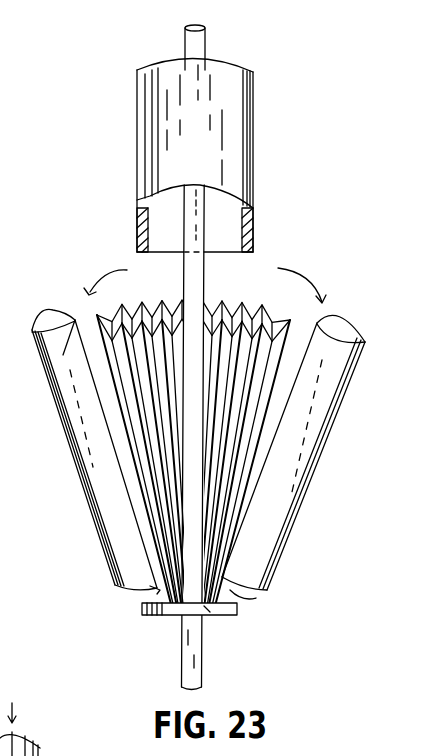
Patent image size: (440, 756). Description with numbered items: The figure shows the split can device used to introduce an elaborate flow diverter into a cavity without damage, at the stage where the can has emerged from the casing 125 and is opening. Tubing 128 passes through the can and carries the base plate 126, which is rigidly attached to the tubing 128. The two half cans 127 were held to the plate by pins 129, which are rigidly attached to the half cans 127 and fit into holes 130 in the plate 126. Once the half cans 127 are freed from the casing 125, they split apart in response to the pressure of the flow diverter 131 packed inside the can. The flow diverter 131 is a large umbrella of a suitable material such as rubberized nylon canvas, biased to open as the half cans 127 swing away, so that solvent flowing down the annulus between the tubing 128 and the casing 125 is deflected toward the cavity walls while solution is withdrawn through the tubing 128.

The casing 125 is at (254, 137).
The base plate 126 is at (142, 612).
The half cans 127 is at (79, 469).
The tubing 128 is at (207, 42).
The pins 129 is at (150, 590).
The holes 130 is at (208, 616).
The flow diverter 131 is at (258, 316).